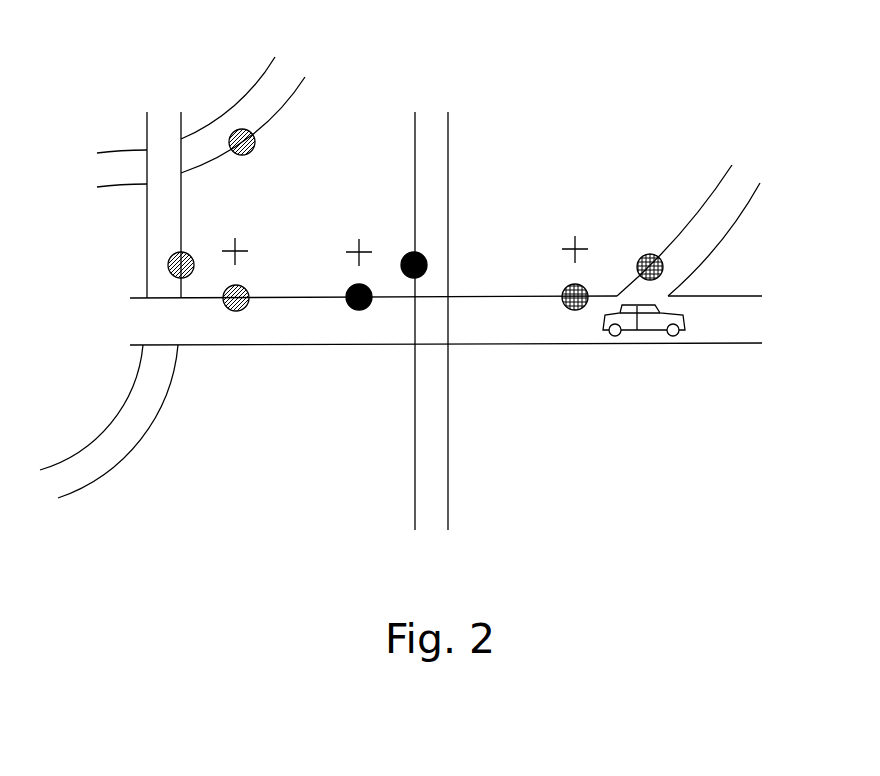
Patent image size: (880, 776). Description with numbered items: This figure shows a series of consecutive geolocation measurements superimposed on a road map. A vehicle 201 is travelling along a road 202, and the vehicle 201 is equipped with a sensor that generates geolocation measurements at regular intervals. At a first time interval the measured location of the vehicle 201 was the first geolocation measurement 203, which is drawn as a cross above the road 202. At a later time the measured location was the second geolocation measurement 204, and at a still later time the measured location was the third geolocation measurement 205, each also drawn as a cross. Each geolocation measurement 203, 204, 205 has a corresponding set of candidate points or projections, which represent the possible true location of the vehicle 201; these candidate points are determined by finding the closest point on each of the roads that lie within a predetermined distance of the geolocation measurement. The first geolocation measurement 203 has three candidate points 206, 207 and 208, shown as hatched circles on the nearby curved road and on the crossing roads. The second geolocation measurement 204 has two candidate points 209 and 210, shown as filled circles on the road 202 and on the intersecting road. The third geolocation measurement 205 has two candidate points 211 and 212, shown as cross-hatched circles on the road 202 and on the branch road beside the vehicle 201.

The vehicle 201 is at (628, 331).
The road 202 is at (732, 327).
The first geolocation measurement 203 is at (245, 242).
The second geolocation measurement 204 is at (367, 248).
The third geolocation measurement 205 is at (592, 234).
The candidate point 206 is at (237, 131).
The candidate point 207 is at (168, 268).
The candidate point 208 is at (236, 311).
The candidate point 209 is at (357, 321).
The candidate point 210 is at (436, 246).
The candidate point 211 is at (562, 320).
The candidate point 212 is at (675, 264).